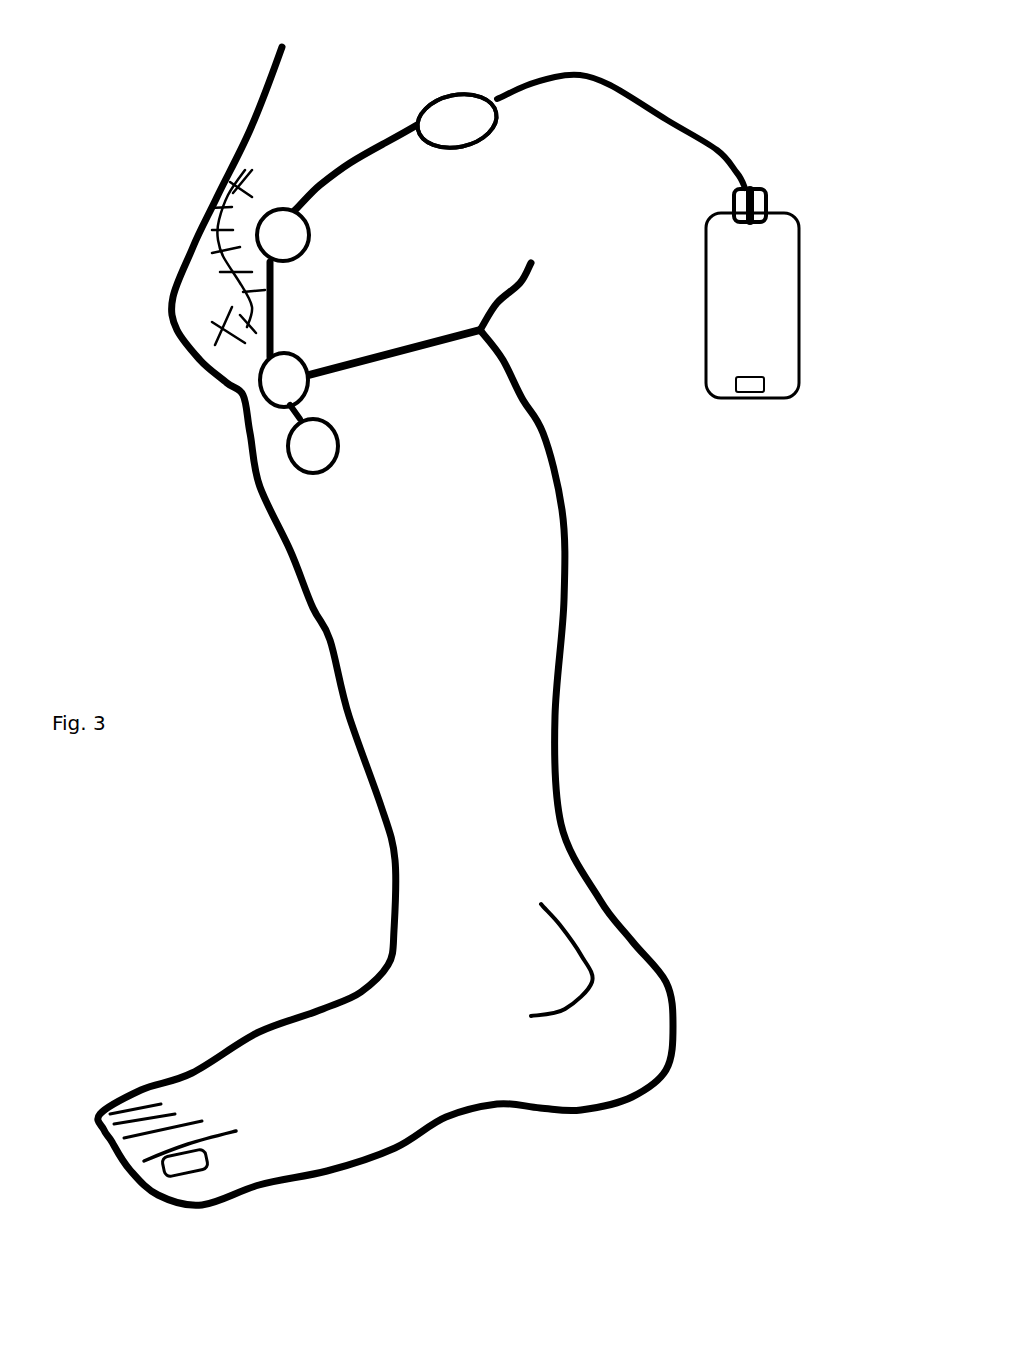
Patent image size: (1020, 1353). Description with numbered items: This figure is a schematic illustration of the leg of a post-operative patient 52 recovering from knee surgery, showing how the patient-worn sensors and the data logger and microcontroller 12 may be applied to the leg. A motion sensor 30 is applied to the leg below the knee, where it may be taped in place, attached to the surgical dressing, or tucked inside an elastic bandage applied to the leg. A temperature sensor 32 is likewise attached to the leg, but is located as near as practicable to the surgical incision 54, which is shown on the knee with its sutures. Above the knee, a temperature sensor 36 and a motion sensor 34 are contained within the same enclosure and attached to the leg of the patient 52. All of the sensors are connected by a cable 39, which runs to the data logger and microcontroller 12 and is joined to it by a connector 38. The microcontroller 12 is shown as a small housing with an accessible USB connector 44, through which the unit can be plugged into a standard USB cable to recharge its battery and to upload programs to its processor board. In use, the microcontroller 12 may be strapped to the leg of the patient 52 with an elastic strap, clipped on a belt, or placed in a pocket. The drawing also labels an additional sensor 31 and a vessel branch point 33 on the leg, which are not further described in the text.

The data logger and microcontroller 12 is at (738, 332).
The motion sensor 30 is at (303, 445).
The sensor 31 is at (277, 375).
The temperature sensor 32 is at (278, 230).
The blood vessel bifurcation 33 is at (490, 330).
The motion sensor 34 is at (450, 128).
The temperature sensor 36 is at (470, 112).
The connector 38 is at (768, 200).
The cable 39 is at (613, 82).
The USB connector 44 is at (760, 383).
The patient 52 is at (516, 534).
The surgical incision 54 is at (205, 272).